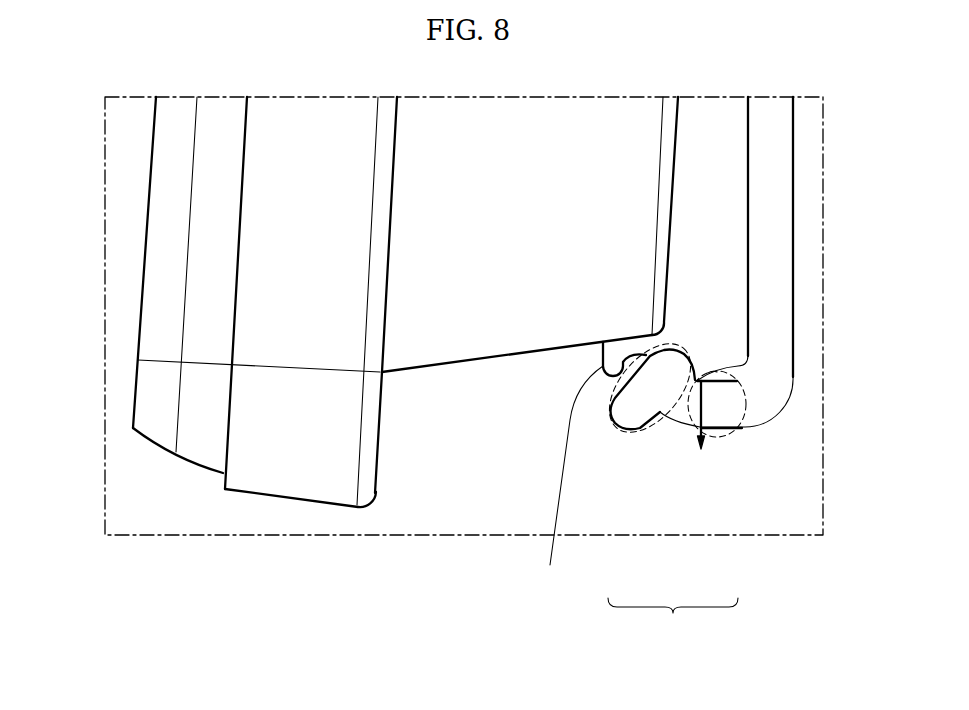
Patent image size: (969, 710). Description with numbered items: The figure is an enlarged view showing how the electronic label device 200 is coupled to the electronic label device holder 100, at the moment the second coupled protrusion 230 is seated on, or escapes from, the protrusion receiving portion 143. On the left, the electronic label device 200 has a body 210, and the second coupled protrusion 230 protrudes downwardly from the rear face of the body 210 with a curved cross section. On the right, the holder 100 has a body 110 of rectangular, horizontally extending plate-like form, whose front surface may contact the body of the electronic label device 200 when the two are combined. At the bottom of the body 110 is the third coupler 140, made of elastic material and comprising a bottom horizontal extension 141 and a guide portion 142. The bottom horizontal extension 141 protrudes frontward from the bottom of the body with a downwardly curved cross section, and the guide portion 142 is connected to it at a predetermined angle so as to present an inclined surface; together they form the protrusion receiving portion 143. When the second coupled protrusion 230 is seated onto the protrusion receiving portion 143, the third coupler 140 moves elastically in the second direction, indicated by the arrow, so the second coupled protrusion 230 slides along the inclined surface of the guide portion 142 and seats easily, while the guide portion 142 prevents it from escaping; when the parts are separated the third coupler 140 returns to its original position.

The electronic label device holder 100 is at (744, 368).
The body 110 is at (785, 193).
The third coupler 140 is at (670, 484).
The bottom horizontal extension 141 is at (718, 438).
The guide portion 142 is at (630, 437).
The protrusion receiving portion 143 is at (760, 366).
The electronic label device 200 is at (356, 349).
The body 210 is at (142, 273).
The second coupled protrusion 230 is at (588, 469).